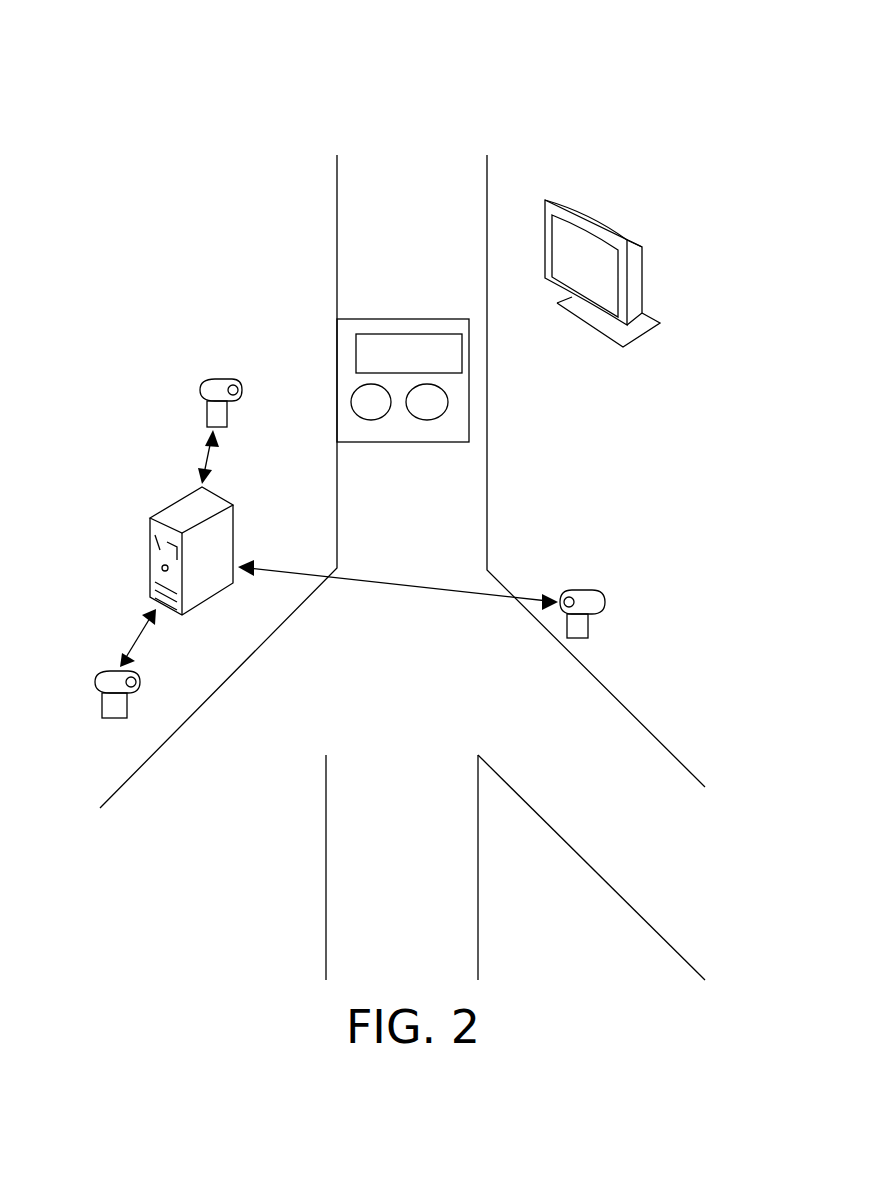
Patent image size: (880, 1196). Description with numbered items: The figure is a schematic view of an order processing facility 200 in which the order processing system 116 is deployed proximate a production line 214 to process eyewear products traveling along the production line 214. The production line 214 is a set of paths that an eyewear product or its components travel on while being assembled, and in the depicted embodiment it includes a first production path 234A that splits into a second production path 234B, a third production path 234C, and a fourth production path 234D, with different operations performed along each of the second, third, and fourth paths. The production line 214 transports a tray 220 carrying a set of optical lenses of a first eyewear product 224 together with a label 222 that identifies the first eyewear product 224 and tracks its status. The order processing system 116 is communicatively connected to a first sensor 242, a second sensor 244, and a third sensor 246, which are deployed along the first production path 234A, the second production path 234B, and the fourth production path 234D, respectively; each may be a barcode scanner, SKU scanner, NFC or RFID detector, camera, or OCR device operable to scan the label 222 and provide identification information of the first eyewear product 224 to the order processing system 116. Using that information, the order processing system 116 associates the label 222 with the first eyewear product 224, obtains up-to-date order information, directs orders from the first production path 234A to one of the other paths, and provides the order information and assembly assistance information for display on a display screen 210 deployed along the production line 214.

The order processing facility 200 is at (246, 64).
The order processing system 116 is at (185, 494).
The display screen 210 is at (642, 247).
The production line 214 is at (487, 173).
The tray 220 is at (337, 372).
The label 222 is at (356, 341).
The first eyewear product 224 is at (351, 401).
The first production path 234A is at (487, 473).
The second production path 234B is at (222, 862).
The third production path 234C is at (478, 923).
The fourth production path 234D is at (647, 925).
The first sensor 242 is at (200, 388).
The second sensor 244 is at (95, 683).
The third sensor 246 is at (612, 614).